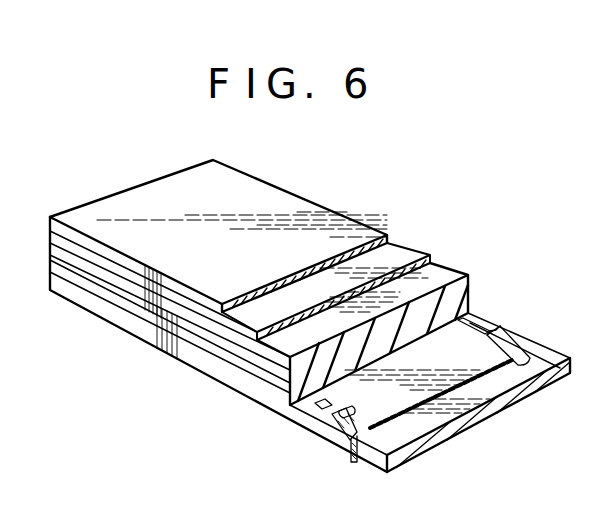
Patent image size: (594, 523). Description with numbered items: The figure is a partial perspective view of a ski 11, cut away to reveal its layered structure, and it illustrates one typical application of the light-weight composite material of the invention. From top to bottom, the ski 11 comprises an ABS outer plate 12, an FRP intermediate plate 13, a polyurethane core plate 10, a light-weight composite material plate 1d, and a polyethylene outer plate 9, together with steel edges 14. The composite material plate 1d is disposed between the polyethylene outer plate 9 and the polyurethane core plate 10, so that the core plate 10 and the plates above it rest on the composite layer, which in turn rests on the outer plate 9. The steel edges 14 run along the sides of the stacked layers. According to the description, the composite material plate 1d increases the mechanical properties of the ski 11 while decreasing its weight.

The ski 11 is at (427, 233).
The ABS outer plate 12 is at (307, 211).
The FRP intermediate plate 13 is at (391, 253).
The core plate 10 is at (468, 292).
The light-weight composite material plate 1d is at (472, 357).
The outer plate 9 is at (425, 422).
The steel edges 14 is at (325, 420).